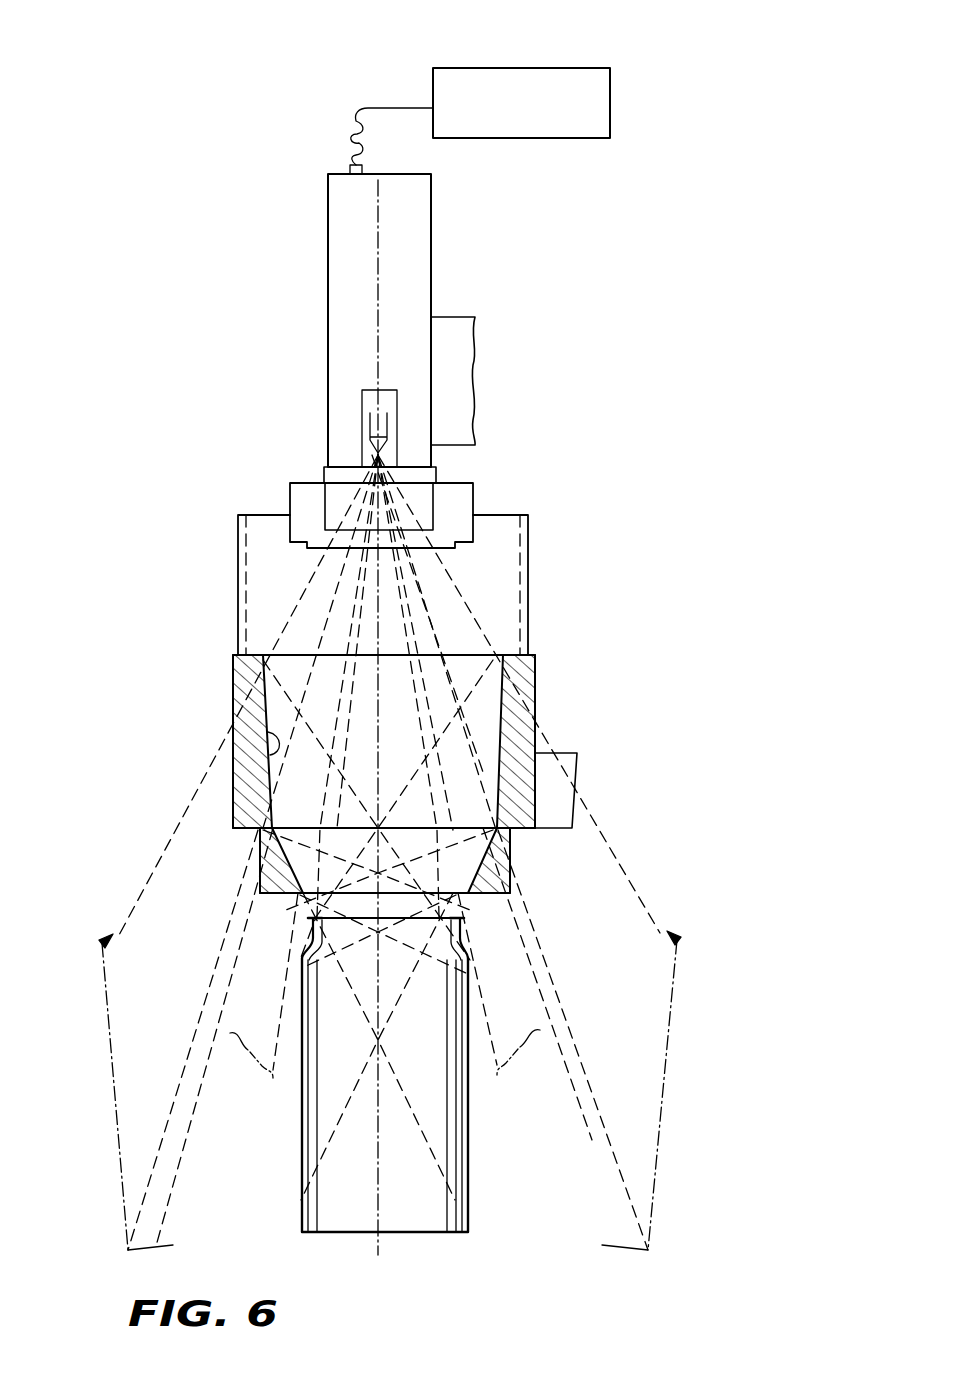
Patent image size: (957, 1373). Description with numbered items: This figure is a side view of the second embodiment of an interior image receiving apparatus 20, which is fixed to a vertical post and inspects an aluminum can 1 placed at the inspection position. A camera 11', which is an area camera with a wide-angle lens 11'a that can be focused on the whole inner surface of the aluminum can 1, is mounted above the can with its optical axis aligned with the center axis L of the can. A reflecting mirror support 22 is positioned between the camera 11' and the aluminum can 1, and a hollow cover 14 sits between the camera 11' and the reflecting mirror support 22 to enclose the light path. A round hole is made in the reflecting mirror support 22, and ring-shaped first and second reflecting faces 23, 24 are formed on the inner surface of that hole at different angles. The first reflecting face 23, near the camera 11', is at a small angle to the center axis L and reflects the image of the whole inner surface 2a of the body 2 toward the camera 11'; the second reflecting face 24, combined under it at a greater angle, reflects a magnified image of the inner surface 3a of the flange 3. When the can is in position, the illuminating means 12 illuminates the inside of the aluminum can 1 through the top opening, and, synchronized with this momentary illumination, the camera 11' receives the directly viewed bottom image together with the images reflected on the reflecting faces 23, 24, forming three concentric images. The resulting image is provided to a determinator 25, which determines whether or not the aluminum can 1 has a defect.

The determinator 25 is at (531, 67).
The camera 11' is at (370, 287).
The wide-angle lens 11'a is at (390, 852).
The interior image receiving apparatus 20 is at (205, 397).
The illuminating means 12 is at (290, 497).
The hollow cover 14 is at (238, 610).
The reflecting mirror support 22 is at (233, 692).
The first reflecting face 23 is at (270, 742).
The second reflecting face 24 is at (300, 853).
The flange 3 is at (470, 928).
The inner surface of the flange 3a is at (300, 952).
The body 2 is at (470, 1148).
The inner surface 2a is at (318, 1104).
The aluminum can 1 is at (470, 1185).
The center axis L is at (388, 1245).